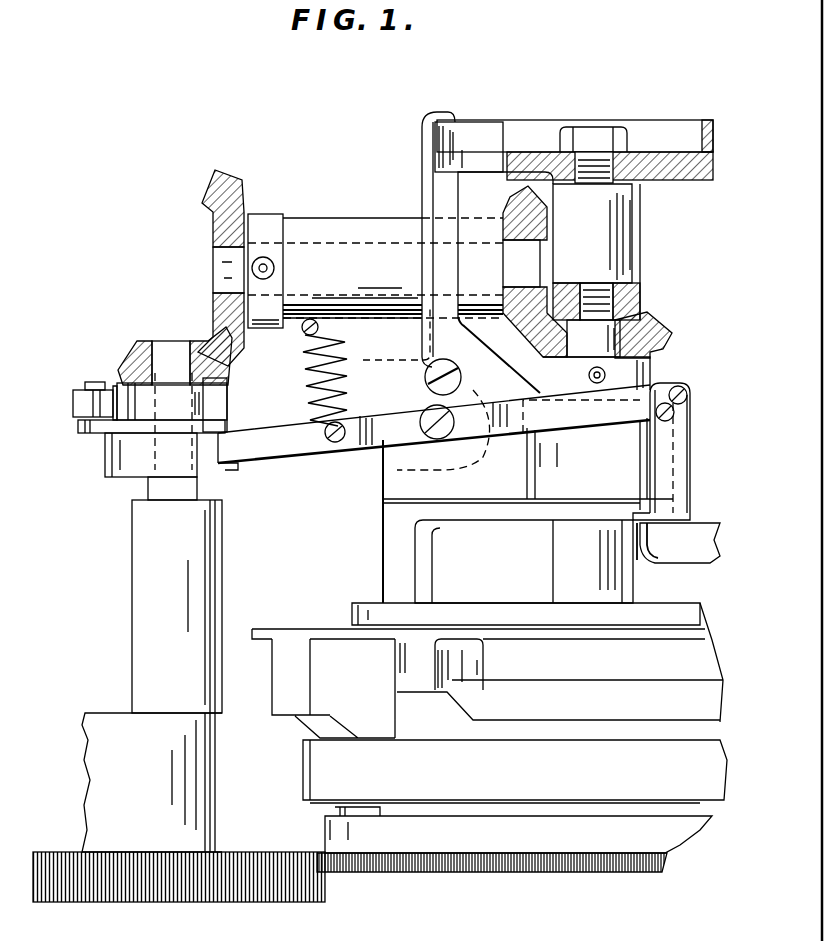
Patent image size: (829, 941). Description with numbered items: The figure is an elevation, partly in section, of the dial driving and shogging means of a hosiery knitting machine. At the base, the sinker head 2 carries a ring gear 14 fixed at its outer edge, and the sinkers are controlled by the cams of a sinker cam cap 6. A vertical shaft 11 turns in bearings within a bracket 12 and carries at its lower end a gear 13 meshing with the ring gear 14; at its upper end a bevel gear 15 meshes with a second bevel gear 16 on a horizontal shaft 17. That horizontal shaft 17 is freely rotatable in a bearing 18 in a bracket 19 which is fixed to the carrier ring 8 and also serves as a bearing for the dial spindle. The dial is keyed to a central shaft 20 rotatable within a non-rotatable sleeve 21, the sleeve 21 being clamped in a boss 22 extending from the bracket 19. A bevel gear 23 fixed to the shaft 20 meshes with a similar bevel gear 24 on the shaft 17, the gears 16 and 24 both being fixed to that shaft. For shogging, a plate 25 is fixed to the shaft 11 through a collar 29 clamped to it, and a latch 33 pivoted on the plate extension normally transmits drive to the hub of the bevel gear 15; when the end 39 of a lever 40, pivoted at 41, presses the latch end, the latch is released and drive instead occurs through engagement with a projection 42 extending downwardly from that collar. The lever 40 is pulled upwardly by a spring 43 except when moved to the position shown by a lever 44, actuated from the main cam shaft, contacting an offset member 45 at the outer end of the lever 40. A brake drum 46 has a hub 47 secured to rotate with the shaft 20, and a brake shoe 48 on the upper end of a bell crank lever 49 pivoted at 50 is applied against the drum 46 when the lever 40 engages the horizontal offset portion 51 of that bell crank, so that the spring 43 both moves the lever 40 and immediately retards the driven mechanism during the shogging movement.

The sinker head 2 is at (330, 833).
The sinker cam cap 6 is at (712, 758).
The carrier ring 8 is at (705, 652).
The shaft 11 is at (160, 352).
The bracket 12 is at (177, 606).
The gear 13 is at (178, 900).
The ring gear 14 is at (392, 874).
The bevel gear 15 is at (173, 343).
The second bevel gear 16 is at (240, 181).
The horizontal shaft 17 is at (213, 262).
The bearing 18 is at (318, 227).
The bracket 19 is at (375, 460).
The central shaft 20 is at (593, 338).
The sleeve 21 is at (524, 561).
The boss 22 is at (528, 510).
The bevel gear 23 is at (672, 332).
The bevel gear 24 is at (530, 234).
The plate 25 is at (80, 431).
The collar 29 is at (108, 466).
The latch 33 is at (75, 403).
The end of lever 39 is at (240, 469).
The lever 40 is at (494, 440).
The pivot 41 is at (437, 440).
The projection 42 is at (227, 407).
The spring 43 is at (332, 348).
The lever 44 is at (700, 530).
The offset member 45 is at (690, 443).
The brake drum 46 is at (713, 125).
The hub 47 is at (613, 252).
The brake shoe 48 is at (470, 126).
The bell crank lever 49 is at (422, 188).
The pivot 50 is at (462, 377).
The horizontal offset portion 51 is at (416, 368).